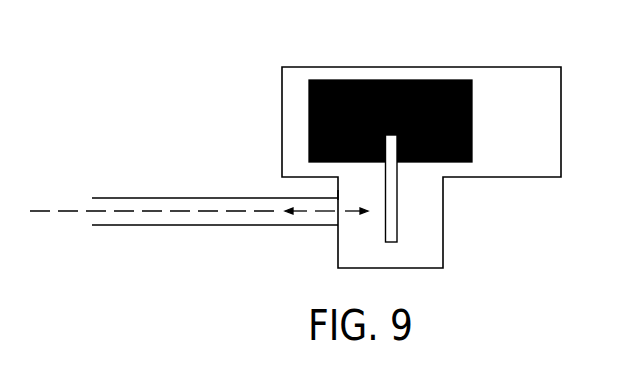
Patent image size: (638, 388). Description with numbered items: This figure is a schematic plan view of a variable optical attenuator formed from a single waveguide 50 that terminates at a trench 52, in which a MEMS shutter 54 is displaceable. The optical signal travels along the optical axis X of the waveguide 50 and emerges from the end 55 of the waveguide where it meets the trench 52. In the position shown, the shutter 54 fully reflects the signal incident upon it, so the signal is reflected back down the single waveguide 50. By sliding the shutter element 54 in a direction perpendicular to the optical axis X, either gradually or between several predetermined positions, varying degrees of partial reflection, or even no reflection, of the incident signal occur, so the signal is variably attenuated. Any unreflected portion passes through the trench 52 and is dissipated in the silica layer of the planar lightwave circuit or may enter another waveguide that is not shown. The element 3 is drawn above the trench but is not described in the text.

The light source / emitter element 3 is at (450, 80).
The waveguide 50 is at (137, 198).
The trench 52 is at (338, 251).
The MEMS shutter 54 is at (398, 217).
The end of the waveguide 55 is at (333, 196).
The optical axis X is at (41, 210).